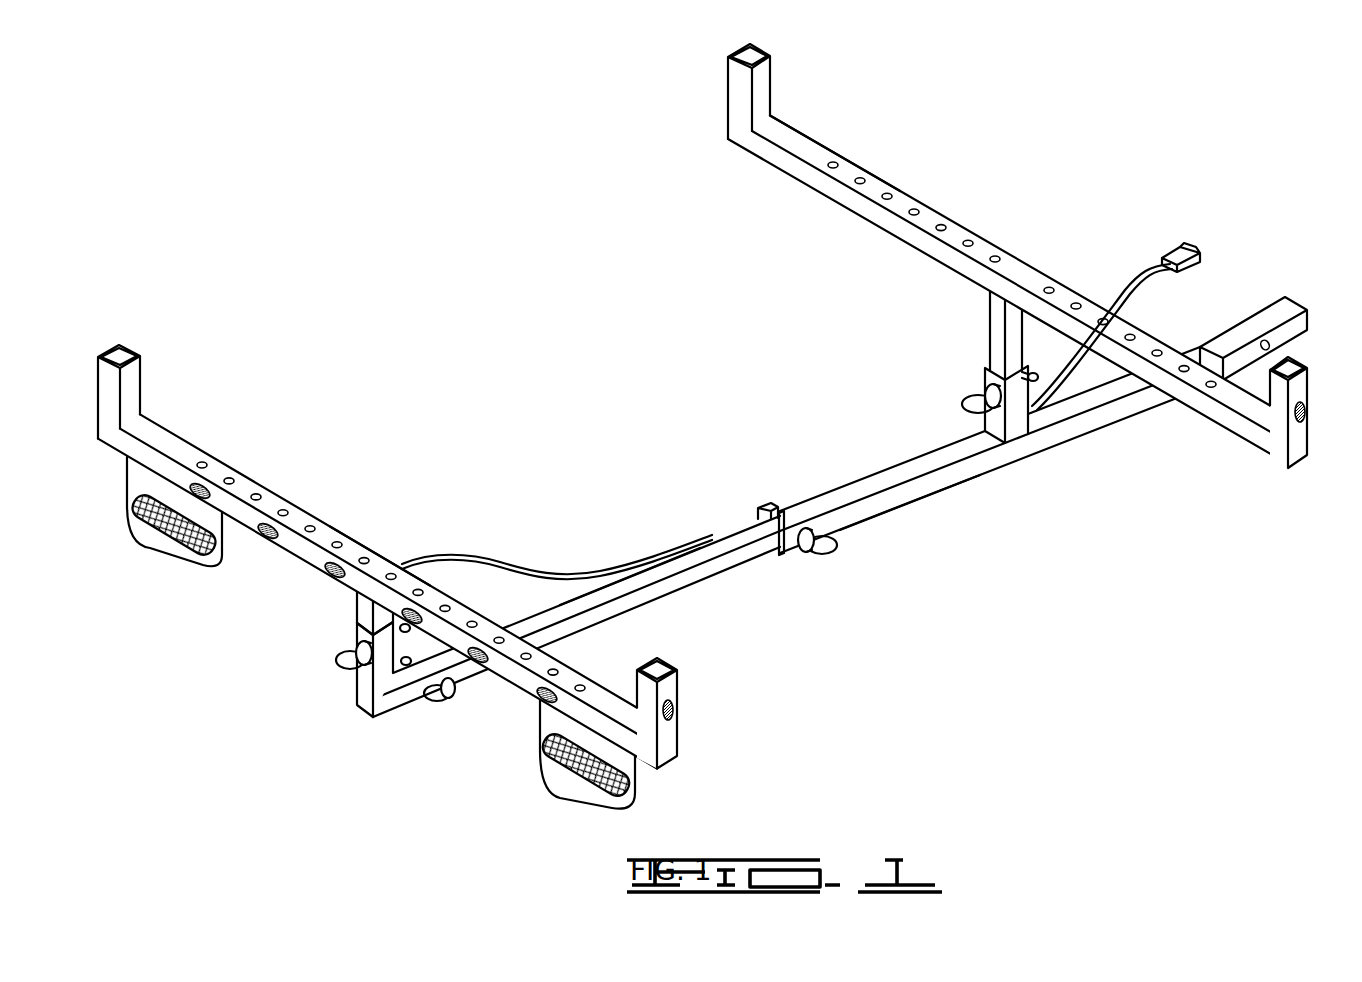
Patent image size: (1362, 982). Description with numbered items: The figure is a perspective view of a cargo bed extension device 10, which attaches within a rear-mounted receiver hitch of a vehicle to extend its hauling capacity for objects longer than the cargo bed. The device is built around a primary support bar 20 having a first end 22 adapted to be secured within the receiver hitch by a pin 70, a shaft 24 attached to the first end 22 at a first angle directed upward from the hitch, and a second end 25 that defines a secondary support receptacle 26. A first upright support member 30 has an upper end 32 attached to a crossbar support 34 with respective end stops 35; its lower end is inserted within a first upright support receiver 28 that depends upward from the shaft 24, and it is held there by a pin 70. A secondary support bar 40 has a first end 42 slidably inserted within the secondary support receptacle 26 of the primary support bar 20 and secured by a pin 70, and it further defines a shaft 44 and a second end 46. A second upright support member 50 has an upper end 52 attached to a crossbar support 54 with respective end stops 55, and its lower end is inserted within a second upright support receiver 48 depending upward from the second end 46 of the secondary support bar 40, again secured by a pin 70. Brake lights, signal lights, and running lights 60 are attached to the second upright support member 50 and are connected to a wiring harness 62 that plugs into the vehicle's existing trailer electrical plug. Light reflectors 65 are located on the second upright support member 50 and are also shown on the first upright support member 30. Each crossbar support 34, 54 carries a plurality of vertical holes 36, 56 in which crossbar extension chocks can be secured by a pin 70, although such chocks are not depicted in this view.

The cargo bed extension device 10 is at (497, 176).
The primary support bar 20 is at (928, 446).
The first end 22 is at (1270, 300).
The shaft 24 is at (1112, 417).
The second end 25 is at (867, 522).
The secondary support receptacle 26 is at (756, 519).
The first upright support receiver 28 is at (1017, 435).
The first upright support member 30 is at (955, 223).
The upper end 32 is at (992, 318).
The crossbar support 34 is at (793, 130).
The end stops 35 is at (735, 92).
The vertical holes 36 is at (864, 174).
The secondary support bar 40 is at (690, 592).
The first end 42 is at (766, 553).
The shaft 44 is at (540, 622).
The second end 46 is at (386, 708).
The second upright support receiver 48 is at (355, 623).
The second upright support member 50 is at (177, 436).
The upper end 52 is at (360, 606).
The crossbar support 54 is at (377, 560).
The end stops 55 is at (145, 357).
The vertical holes 56 is at (229, 476).
The brake lights, signal lights, and running lights 60 is at (163, 543).
The wiring harness 62 is at (1137, 277).
The light reflectors 65 is at (1306, 412).
The pin 70 is at (985, 387).